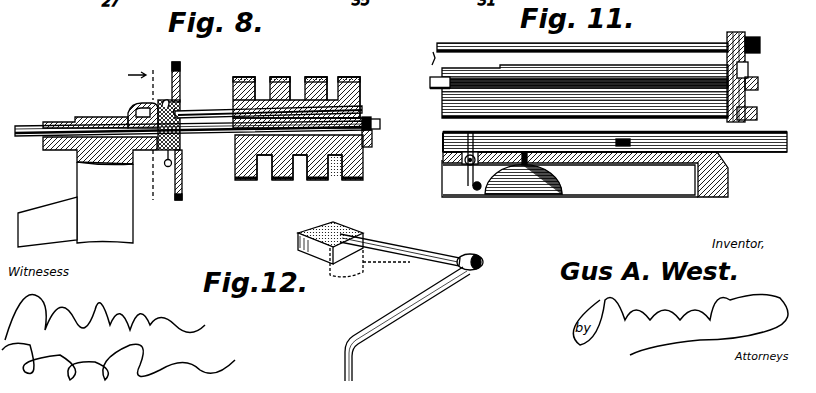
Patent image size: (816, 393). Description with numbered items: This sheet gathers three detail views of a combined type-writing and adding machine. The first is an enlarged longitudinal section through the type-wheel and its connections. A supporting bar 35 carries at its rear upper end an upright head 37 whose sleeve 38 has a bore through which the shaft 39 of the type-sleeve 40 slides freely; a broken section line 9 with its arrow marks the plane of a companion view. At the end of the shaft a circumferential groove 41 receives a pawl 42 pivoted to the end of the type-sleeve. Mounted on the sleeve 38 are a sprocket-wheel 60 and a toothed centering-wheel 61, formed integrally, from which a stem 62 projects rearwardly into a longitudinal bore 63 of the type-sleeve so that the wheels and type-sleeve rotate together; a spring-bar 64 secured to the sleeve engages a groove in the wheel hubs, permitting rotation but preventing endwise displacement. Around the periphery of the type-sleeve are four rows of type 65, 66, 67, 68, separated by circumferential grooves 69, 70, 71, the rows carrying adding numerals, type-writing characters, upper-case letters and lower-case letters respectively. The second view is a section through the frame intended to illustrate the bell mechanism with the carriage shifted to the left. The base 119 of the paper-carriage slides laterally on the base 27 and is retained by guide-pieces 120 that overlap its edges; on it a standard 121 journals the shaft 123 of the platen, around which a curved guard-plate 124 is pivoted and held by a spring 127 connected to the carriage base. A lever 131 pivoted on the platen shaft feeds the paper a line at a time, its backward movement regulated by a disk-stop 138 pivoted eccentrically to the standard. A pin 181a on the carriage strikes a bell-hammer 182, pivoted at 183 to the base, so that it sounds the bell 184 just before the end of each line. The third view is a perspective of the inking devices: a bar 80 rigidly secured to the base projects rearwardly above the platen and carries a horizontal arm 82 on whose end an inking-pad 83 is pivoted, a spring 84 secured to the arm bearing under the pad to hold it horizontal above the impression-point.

In FIG. 8, the section line 9 is at (144, 134).
In FIG. 11, the base 27 is at (728, 181).
In FIG. 8, the bar 35 is at (47, 222).
In FIG. 8, the upright bar or head 37 is at (100, 190).
In FIG. 8, the sleeve 38 is at (62, 121).
In FIG. 8, the shaft 39 is at (37, 145).
In FIG. 8, the type-sleeve 40 is at (243, 150).
In FIG. 8, the circumferential groove 41 is at (372, 119).
In FIG. 8, the pawl 42 is at (380, 124).
In FIG. 8, the sprocket-wheel 60 is at (167, 167).
In FIG. 8, the centering-wheel 61 is at (184, 182).
In FIG. 8, the stem 62 is at (200, 111).
In FIG. 8, the longitudinal bore or passage 63 is at (318, 100).
In FIG. 8, the spring-bar 64 is at (143, 104).
In FIG. 8, the type row 65 is at (241, 76).
In FIG. 8, the type row 66 is at (276, 76).
In FIG. 8, the type row 67 is at (318, 76).
In FIG. 8, the type row 68 is at (352, 76).
In FIG. 8, the circumferential groove 69 is at (265, 166).
In FIG. 8, the circumferential groove 70 is at (302, 166).
In FIG. 8, the circumferential groove 71 is at (332, 168).
In FIG. 12, the bar 80 is at (407, 324).
In FIG. 12, the horizontal arm 82 is at (422, 252).
In FIG. 8, the inking-pad 83 is at (341, 172).
In FIG. 12, the inking-pad 83 is at (345, 226).
In FIG. 12, the spring 84 is at (390, 263).
In FIG. 11, the base of the paper-carriage 119 is at (735, 153).
In FIG. 11, the guide-pieces 120 is at (632, 147).
In FIG. 11, the standard 121 is at (750, 69).
In FIG. 11, the shaft of the platen 123 is at (758, 84).
In FIG. 11, the guard-plate 124 is at (579, 91).
In FIG. 11, the spring 127 is at (757, 116).
In FIG. 11, the lever 131 is at (730, 75).
In FIG. 11, the disk-stop 138 is at (744, 40).
In FIG. 11, the pin 181a is at (448, 140).
In FIG. 11, the bell-hammer 182 is at (474, 190).
In FIG. 11, the pivot 183 is at (463, 163).
In FIG. 11, the bell 184 is at (512, 186).